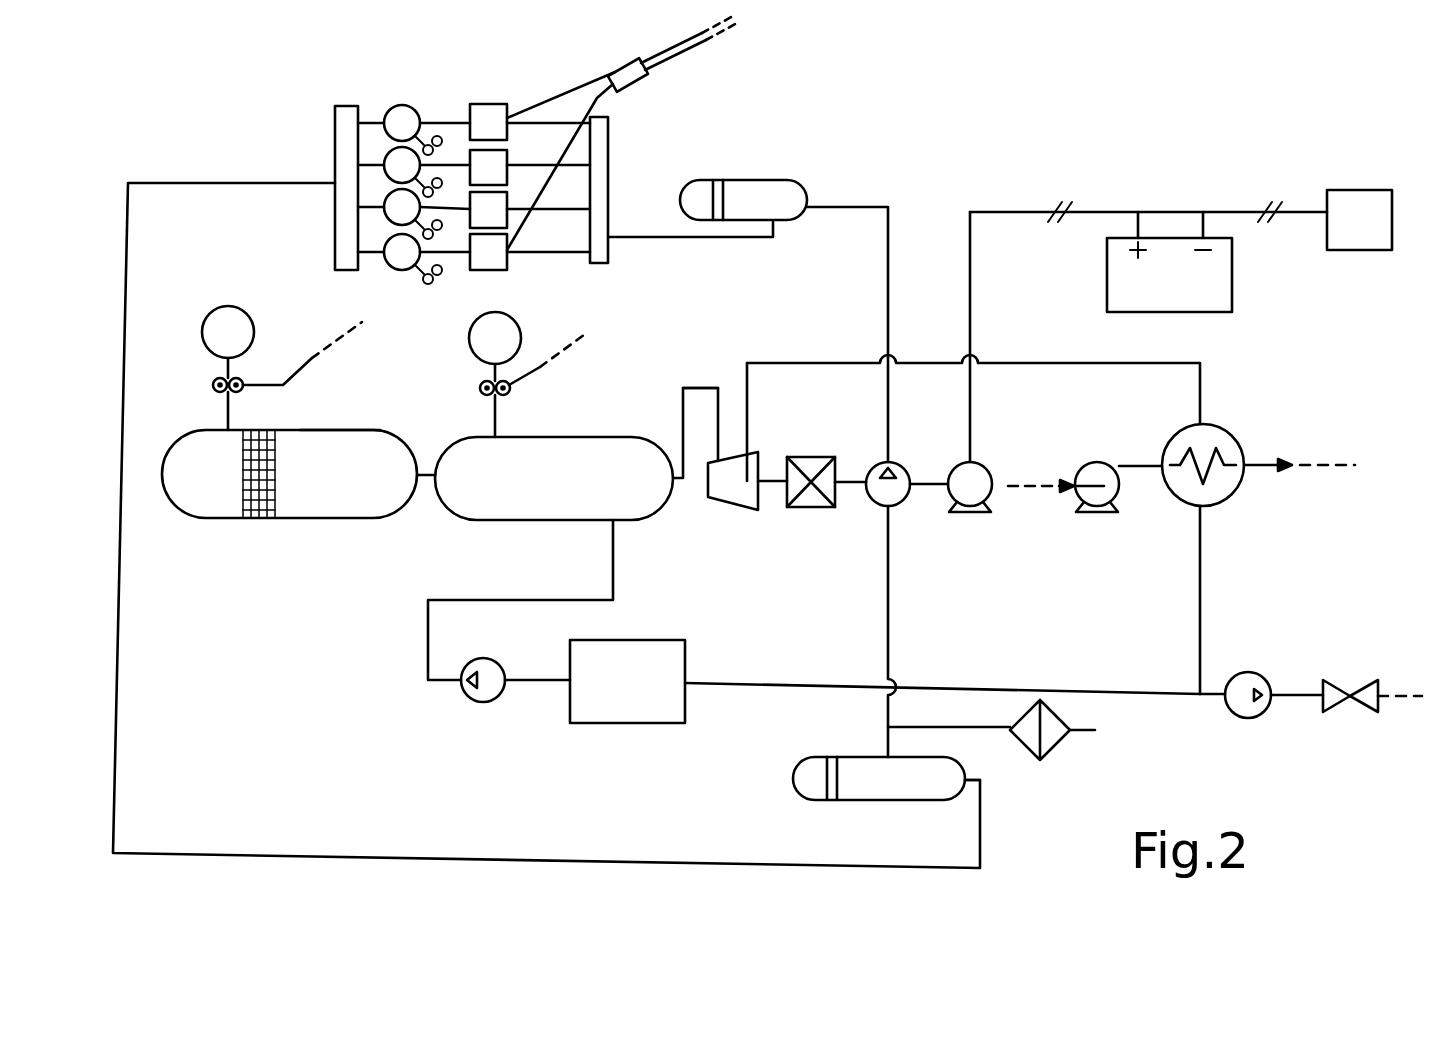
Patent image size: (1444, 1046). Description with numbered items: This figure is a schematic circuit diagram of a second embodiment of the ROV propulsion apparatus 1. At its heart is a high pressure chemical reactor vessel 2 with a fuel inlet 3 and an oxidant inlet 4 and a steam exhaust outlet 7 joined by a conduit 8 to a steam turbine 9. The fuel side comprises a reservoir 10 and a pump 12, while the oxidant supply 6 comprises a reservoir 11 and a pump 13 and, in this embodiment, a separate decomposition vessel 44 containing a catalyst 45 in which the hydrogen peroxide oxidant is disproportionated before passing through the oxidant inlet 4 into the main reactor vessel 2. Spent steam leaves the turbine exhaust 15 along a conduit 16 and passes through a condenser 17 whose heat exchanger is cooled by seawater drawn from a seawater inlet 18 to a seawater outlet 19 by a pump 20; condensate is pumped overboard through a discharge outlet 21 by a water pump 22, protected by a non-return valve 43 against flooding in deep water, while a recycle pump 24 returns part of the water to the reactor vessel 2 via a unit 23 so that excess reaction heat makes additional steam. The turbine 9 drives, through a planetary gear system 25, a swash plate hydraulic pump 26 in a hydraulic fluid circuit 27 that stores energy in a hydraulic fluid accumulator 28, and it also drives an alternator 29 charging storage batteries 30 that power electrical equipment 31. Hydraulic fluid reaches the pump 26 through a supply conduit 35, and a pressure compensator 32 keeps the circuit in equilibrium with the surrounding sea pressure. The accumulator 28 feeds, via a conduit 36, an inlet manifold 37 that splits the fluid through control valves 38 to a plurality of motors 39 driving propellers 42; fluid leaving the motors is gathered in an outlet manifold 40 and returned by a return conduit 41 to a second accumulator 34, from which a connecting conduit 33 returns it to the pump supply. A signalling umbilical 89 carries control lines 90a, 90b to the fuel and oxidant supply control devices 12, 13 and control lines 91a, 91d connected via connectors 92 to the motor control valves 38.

The ROV propulsion apparatus 1 is at (612, 392).
The high pressure chemical reactor vessel 2 is at (505, 522).
The fuel inlet 3 is at (503, 436).
The oxidant inlet 4 is at (426, 470).
The oxidant supply 6 is at (338, 432).
The steam exhaust outlet 7 is at (683, 418).
The conduit 8 is at (708, 388).
The steam turbine 9 is at (730, 510).
The fuel reservoir 10 is at (510, 318).
The oxidant reservoir 11 is at (228, 306).
The fuel pump 12 is at (480, 388).
The oxidant pump 13 is at (213, 381).
The turbine exhaust 15 is at (746, 372).
The conduit 16 is at (1052, 363).
The condenser 17 is at (1238, 440).
The seawater inlet 18 is at (1060, 482).
The seawater outlet 19 is at (1258, 470).
The pump 20 is at (1100, 468).
The discharge outlet 21 is at (1418, 693).
The water pump 22 is at (1240, 718).
The unit 23 is at (645, 640).
The recycle pump 24 is at (470, 700).
The planetary gear system 25 is at (812, 457).
The swash plate hydraulic pump 26 is at (905, 470).
The hydraulic fluid circuit 27 is at (888, 290).
The hydraulic fluid accumulator 28 is at (800, 183).
The alternator 29 is at (982, 463).
The storage batteries 30 is at (1232, 288).
The electrical equipment 31 is at (1360, 190).
The pressure compensator 32 is at (1055, 752).
The connecting conduit 33 is at (880, 742).
The second accumulator 34 is at (790, 780).
The supply conduit 35 is at (892, 608).
The conduit 36 is at (773, 240).
The inlet manifold 37 is at (610, 182).
The control valves 38 is at (490, 104).
The motors 39 is at (398, 105).
The outlet manifold 40 is at (335, 118).
The return conduit 41 is at (247, 183).
The propellers 42 is at (405, 283).
The non-return valve 43 is at (1342, 680).
The decomposition vessel 44 is at (352, 520).
The catalyst 45 is at (277, 490).
The signalling umbilical 89 is at (695, 58).
The control line 90a is at (551, 367).
The control line 90b is at (322, 353).
The control line 91a is at (565, 90).
The control line 91d is at (525, 232).
The connectors 92 is at (627, 60).